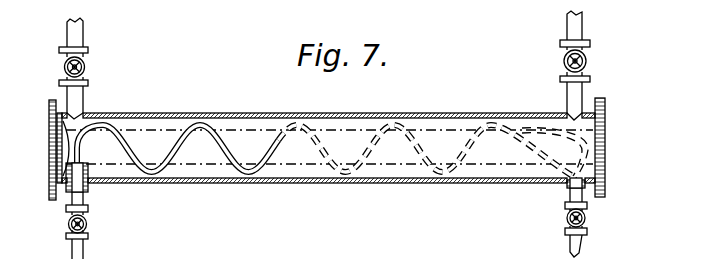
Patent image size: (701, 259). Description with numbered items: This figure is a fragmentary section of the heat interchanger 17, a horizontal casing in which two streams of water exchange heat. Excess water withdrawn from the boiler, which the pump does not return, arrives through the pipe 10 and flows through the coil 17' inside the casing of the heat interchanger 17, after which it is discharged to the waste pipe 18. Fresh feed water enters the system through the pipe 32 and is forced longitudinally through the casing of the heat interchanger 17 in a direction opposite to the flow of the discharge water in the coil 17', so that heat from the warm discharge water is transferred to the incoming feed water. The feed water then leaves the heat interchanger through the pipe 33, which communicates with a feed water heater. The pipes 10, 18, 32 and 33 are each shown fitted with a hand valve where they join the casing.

The pipe 10 is at (90, 249).
The heat interchanger 17 is at (203, 129).
The coil 17' is at (433, 130).
The waste pipe 18 is at (580, 257).
The pipe 32 is at (590, 45).
The pipe 33 is at (83, 93).